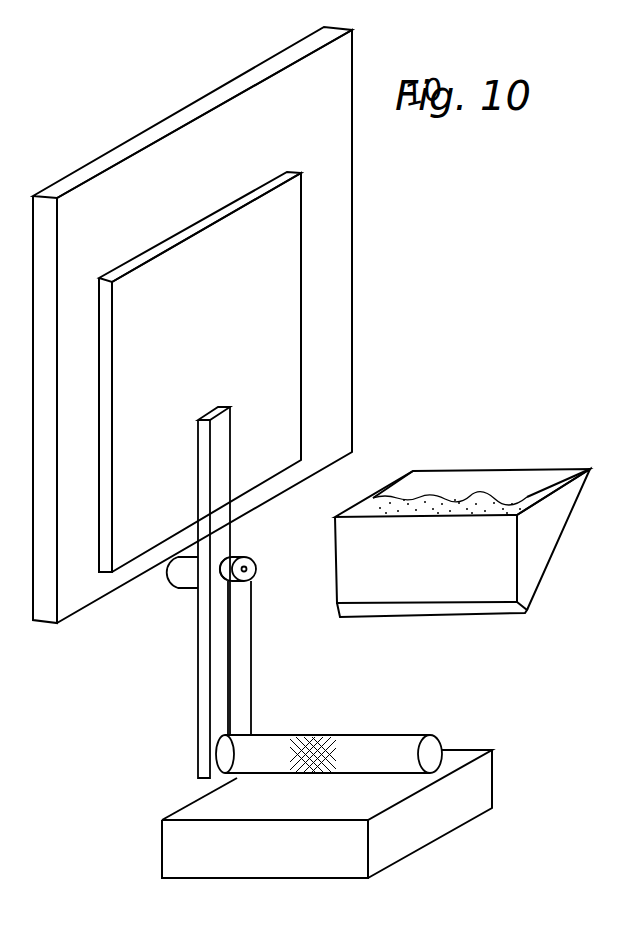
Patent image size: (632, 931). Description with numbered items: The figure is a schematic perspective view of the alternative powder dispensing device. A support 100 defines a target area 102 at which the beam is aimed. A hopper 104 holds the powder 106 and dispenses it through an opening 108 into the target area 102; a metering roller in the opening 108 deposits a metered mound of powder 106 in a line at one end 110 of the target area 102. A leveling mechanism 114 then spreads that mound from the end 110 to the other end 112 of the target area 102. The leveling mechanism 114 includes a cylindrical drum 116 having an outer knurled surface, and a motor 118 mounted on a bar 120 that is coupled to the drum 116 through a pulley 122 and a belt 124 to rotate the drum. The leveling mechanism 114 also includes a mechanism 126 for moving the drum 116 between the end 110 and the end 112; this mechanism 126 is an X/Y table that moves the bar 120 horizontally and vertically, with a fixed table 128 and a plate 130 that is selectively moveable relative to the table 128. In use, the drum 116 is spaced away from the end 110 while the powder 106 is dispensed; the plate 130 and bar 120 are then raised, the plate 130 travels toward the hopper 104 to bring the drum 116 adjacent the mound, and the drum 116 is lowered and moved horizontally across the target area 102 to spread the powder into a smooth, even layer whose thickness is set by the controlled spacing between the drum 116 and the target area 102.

The base 100 is at (305, 777).
The target area 102 is at (296, 748).
The hopper 104 is at (483, 529).
The powder 106 is at (447, 502).
The opening 108 is at (520, 610).
The end of the target area 110 is at (467, 752).
The other end of the target area 112 is at (193, 803).
The leveling mechanism 114 is at (181, 592).
The cylindrical drum 116 is at (354, 732).
The motor 118 is at (166, 593).
The bar 120 is at (197, 663).
The pulley 122 is at (258, 564).
The belt 124 is at (253, 643).
The mechanism for moving the drum 126 is at (256, 325).
The table 128 is at (62, 180).
The plate 130 is at (186, 307).